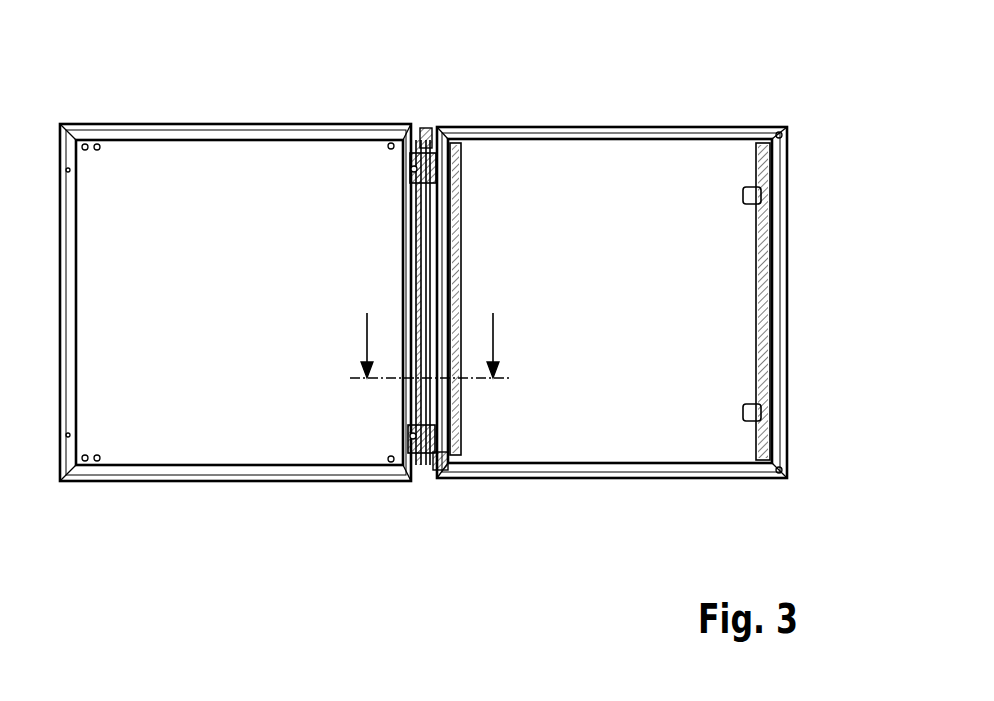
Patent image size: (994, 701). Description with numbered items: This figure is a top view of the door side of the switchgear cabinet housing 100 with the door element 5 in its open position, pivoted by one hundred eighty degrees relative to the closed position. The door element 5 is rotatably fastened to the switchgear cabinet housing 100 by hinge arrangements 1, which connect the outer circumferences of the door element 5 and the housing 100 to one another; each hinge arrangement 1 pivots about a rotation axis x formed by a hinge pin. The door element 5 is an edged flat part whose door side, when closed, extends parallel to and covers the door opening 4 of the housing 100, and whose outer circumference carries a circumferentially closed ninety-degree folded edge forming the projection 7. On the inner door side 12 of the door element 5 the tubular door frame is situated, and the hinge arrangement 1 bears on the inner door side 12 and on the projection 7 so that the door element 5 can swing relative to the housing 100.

The switchgear cabinet housing 100 is at (590, 86).
The hinge arrangement 1 is at (427, 304).
The door opening 4 is at (232, 434).
The door element 5 is at (612, 299).
The projection 7 is at (405, 126).
The inner door side 12 is at (648, 416).
The rotation axis x is at (430, 132).